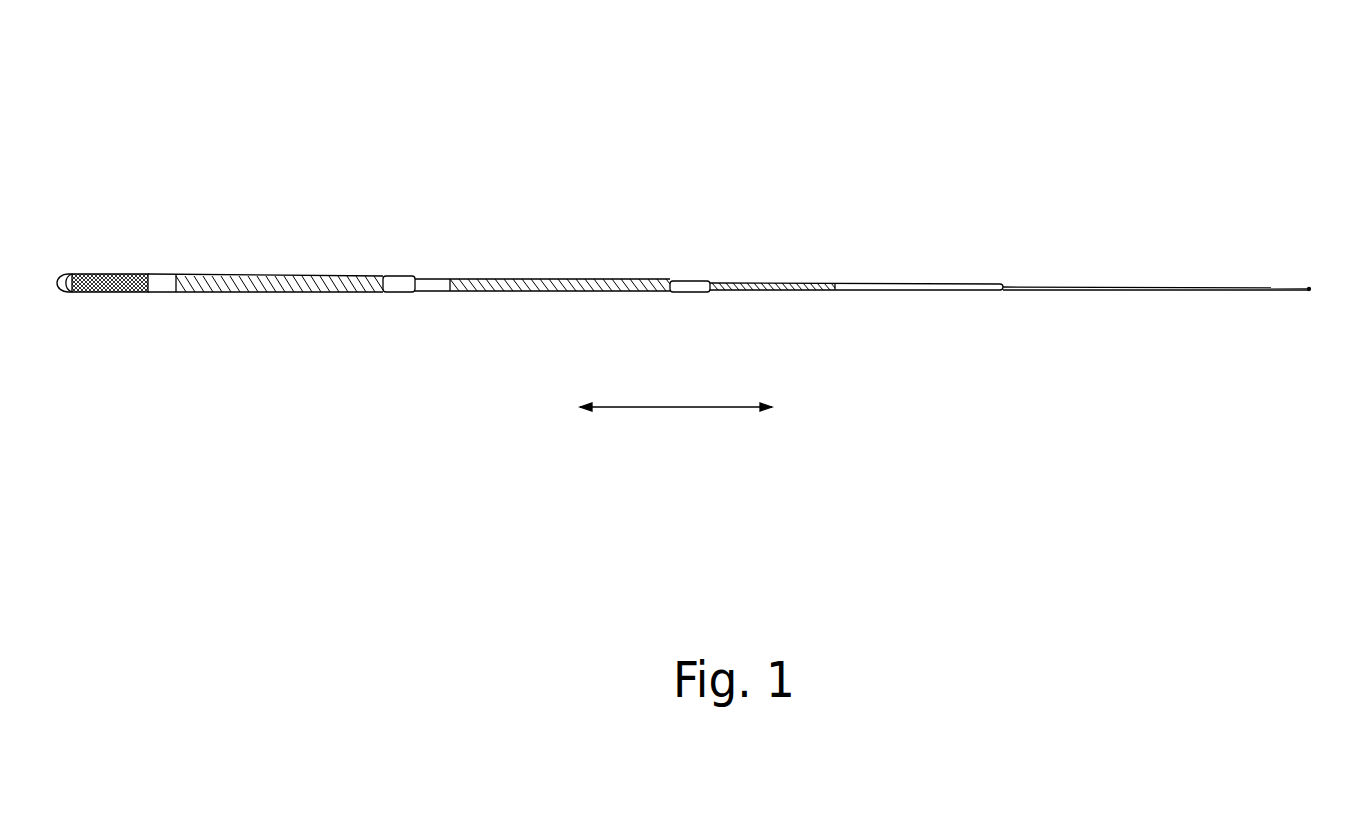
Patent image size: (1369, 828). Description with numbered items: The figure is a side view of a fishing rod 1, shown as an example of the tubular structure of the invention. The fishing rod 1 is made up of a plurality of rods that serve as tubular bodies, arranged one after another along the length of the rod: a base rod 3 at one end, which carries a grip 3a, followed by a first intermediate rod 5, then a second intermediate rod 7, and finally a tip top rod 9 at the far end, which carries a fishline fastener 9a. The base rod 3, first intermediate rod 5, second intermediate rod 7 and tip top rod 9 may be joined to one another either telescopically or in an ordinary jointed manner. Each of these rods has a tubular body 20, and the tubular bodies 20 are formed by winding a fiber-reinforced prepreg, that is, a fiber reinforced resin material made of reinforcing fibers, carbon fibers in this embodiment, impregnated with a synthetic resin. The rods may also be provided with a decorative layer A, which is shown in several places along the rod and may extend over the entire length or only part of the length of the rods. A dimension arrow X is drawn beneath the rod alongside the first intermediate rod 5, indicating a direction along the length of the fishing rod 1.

The fishing rod 1 is at (805, 135).
The base rod 3 is at (162, 277).
The grip 3a is at (110, 293).
The first intermediate rod 5 is at (692, 280).
The second intermediate rod 7 is at (916, 280).
The tip top rod 9 is at (1146, 284).
The fishline fastener 9a is at (1310, 292).
The tubular body 20 is at (398, 293).
The decorative layer A is at (316, 278).
The longitudinal direction X is at (676, 423).